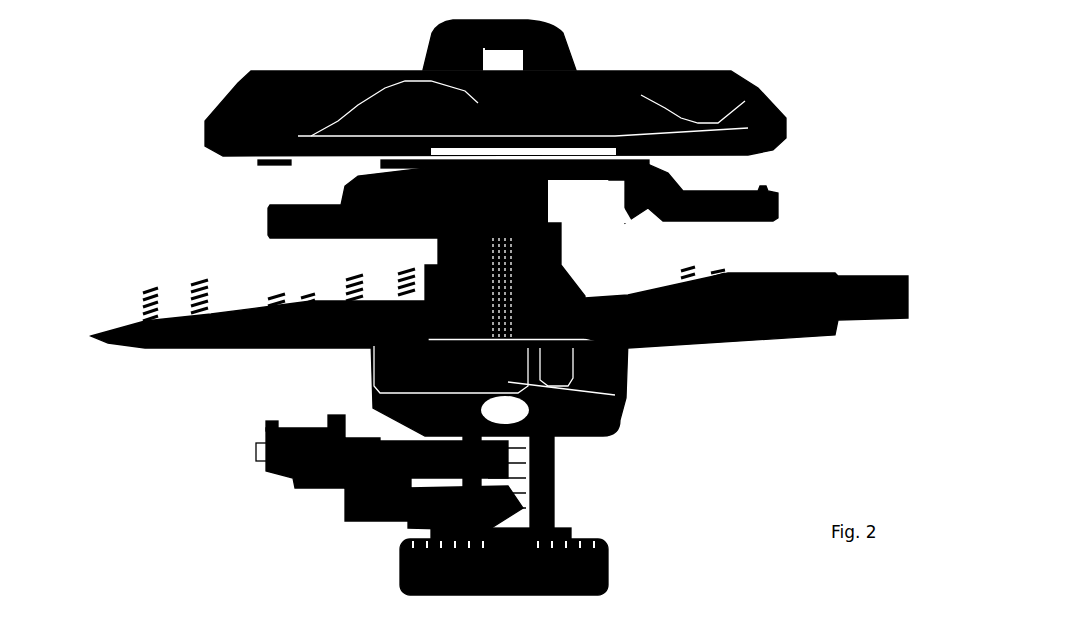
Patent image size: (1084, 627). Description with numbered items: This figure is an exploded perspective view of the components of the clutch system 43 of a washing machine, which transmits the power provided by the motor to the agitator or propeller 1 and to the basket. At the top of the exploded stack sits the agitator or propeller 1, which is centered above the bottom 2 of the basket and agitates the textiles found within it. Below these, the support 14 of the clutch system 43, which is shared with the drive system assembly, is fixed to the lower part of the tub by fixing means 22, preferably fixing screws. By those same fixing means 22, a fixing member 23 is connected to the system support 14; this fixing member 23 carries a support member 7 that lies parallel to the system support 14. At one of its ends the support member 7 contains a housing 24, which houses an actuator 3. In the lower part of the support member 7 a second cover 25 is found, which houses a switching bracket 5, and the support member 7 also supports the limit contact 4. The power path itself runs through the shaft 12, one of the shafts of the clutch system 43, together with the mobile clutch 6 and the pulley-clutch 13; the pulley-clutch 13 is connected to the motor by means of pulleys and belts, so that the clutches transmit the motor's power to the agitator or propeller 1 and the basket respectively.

The agitator or propeller 1 is at (740, 92).
The bottom 2 is at (275, 202).
The actuator 3 is at (257, 453).
The limit contact 4 is at (340, 483).
The switching bracket 5 is at (408, 513).
The mobile clutch 6 is at (530, 519).
The support member 7 is at (323, 425).
The shaft 12 is at (607, 387).
The pulley-clutch 13 is at (596, 573).
The support 14 is at (885, 274).
The fixing means 22 is at (130, 281).
The fixing member 23 is at (600, 368).
The housing 24 is at (266, 421).
The second cover 25 is at (337, 502).
The clutch system 43 is at (683, 492).